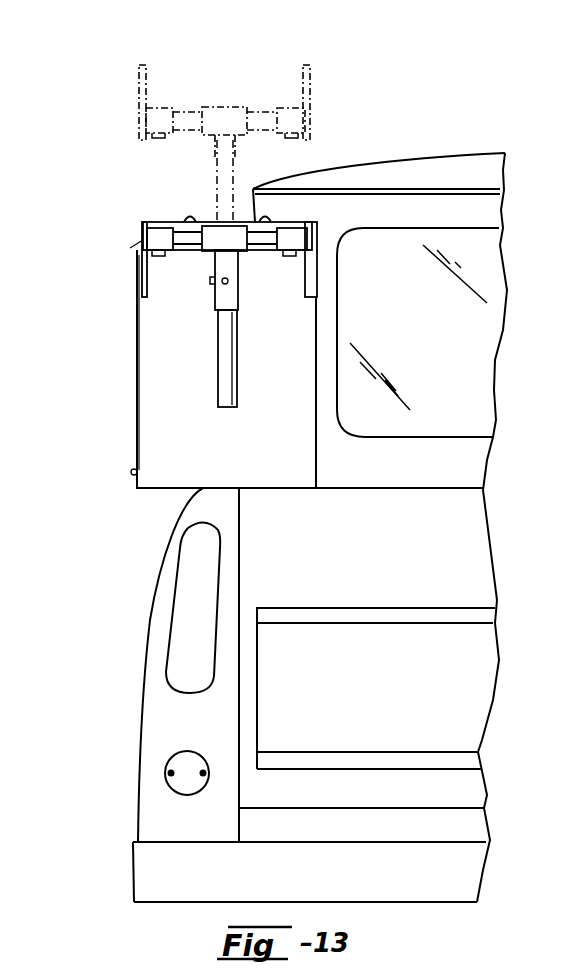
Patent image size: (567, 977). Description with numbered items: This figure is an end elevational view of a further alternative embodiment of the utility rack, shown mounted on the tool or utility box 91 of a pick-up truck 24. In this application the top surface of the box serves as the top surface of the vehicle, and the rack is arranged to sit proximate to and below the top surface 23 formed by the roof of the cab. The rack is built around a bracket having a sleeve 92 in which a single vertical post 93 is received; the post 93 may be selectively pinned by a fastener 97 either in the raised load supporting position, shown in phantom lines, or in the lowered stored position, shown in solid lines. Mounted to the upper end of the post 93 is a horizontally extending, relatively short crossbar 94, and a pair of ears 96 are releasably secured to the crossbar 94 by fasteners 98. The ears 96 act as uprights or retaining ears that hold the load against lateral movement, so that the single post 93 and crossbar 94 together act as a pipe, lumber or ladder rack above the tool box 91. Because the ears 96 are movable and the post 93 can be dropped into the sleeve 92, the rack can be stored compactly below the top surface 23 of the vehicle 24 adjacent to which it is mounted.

The top surface 23 is at (268, 222).
The pick-up truck 24 is at (157, 578).
The tool box 91 is at (137, 378).
The sleeve 92 is at (279, 256).
The vertical post 93 is at (237, 392).
The crossbar 94 is at (193, 108).
The ears 96 is at (140, 97).
The fastener 97 is at (211, 280).
The fasteners 98 is at (147, 266).